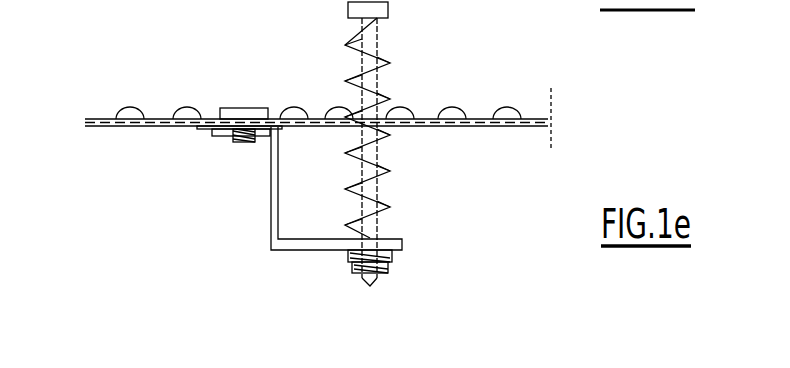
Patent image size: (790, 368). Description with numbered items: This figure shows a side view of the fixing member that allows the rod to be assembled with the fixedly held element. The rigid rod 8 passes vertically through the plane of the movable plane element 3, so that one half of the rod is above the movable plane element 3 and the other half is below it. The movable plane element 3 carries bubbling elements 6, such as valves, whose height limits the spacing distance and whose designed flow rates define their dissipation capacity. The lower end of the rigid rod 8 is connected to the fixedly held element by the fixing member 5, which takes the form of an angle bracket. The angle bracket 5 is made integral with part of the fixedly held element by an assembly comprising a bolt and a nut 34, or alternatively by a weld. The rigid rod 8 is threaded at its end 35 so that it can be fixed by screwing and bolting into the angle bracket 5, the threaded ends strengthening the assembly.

The movable plane element 3 is at (317, 115).
The bubbling element 6 is at (135, 102).
The nut 34 is at (242, 105).
The fixing member 5 is at (268, 196).
The rigid rod 8 is at (382, 209).
The threaded end 35 is at (358, 276).